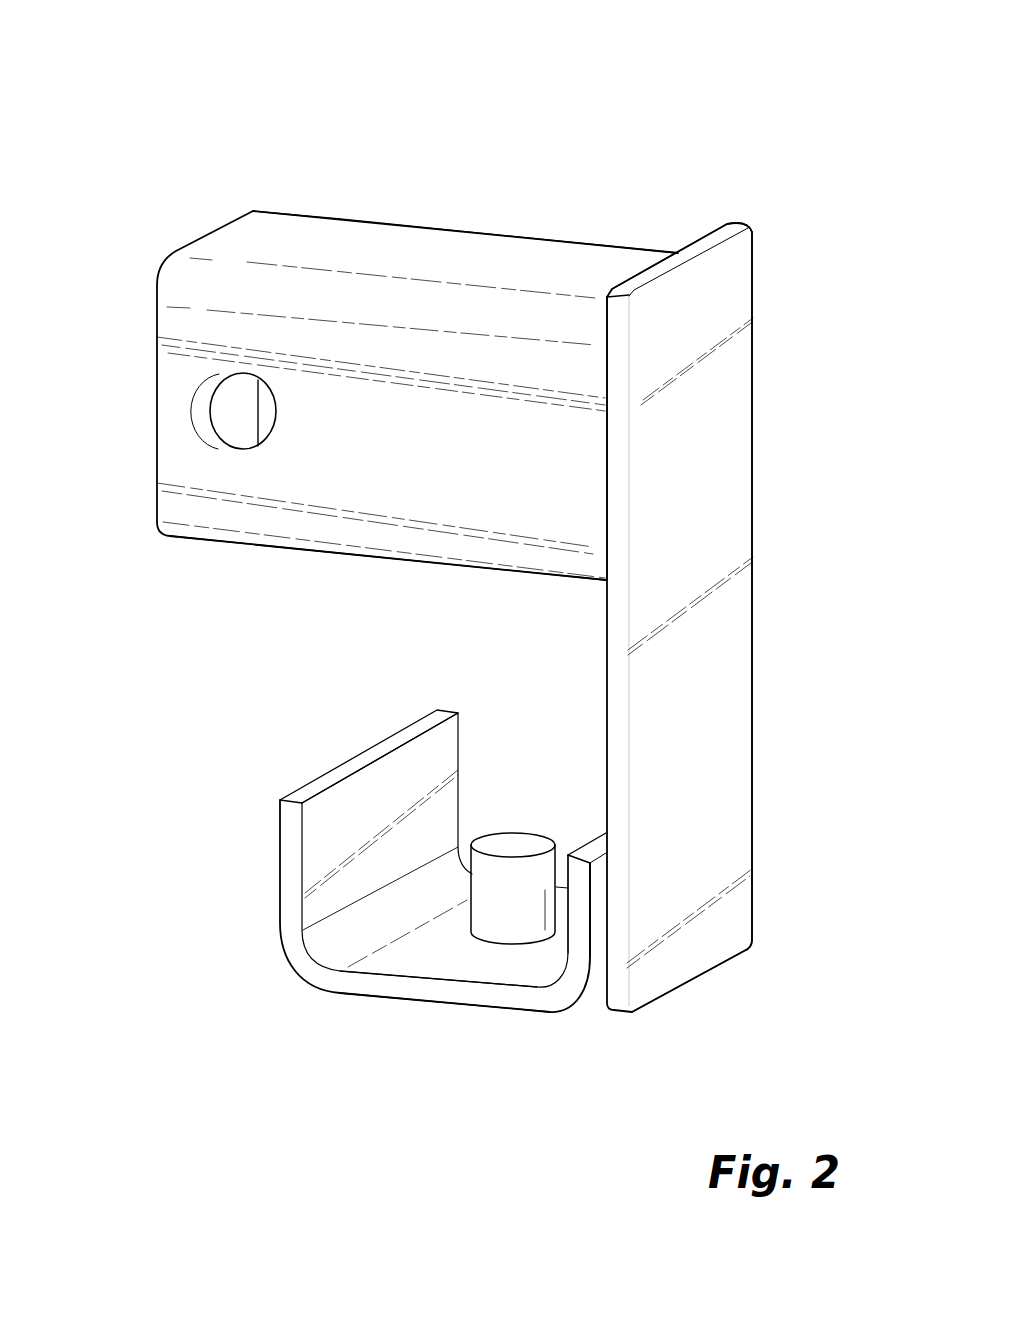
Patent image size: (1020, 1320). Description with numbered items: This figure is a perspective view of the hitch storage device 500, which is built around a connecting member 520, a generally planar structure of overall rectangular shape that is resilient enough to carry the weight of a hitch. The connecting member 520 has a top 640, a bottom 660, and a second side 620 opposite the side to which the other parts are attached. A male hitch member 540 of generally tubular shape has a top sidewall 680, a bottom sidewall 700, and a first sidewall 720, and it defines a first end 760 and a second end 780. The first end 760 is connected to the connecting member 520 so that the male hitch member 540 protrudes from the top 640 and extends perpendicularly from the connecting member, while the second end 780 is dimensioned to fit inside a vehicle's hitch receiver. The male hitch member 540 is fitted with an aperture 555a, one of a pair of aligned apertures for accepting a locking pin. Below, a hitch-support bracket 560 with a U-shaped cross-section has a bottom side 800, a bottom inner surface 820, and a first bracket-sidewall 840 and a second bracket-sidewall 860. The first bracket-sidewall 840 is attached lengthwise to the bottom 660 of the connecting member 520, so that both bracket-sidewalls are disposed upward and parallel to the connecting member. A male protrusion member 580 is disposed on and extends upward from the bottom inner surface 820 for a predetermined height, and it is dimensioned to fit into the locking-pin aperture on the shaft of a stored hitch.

The hitch storage device 500 is at (453, 148).
The connecting member 520 is at (754, 628).
The male hitch member 540 is at (330, 243).
The aperture 555a is at (232, 412).
The hitch-support bracket 560 is at (309, 972).
The male protrusion member 580 is at (525, 832).
The second side 620 is at (711, 531).
The top 640 is at (740, 281).
The bottom 660 is at (740, 912).
The top sidewall 680 is at (432, 243).
The bottom sidewall 700 is at (342, 555).
The first sidewall 720 is at (453, 466).
The first end 760 is at (607, 263).
The second end 780 is at (170, 368).
The bottom side 800 is at (414, 992).
The bottom inner surface 820 is at (470, 968).
The first bracket-sidewall 840 is at (597, 900).
The second bracket-sidewall 860 is at (362, 811).